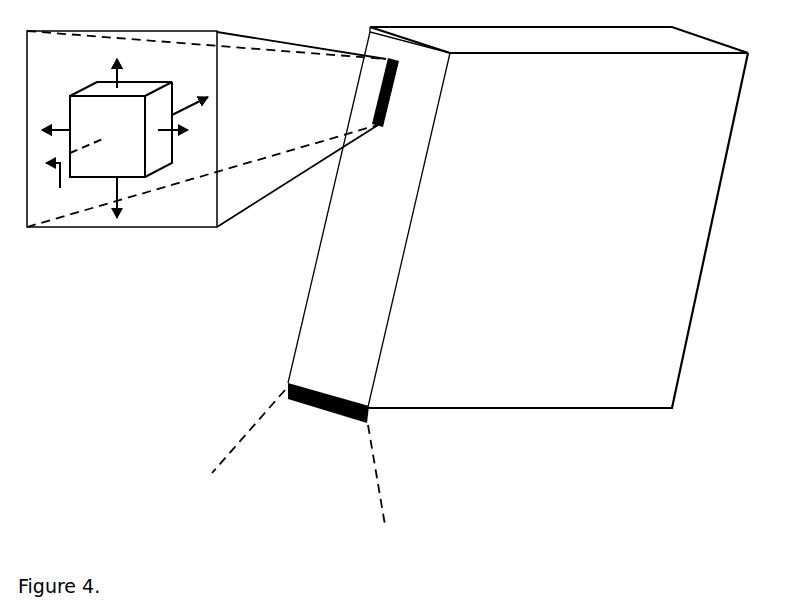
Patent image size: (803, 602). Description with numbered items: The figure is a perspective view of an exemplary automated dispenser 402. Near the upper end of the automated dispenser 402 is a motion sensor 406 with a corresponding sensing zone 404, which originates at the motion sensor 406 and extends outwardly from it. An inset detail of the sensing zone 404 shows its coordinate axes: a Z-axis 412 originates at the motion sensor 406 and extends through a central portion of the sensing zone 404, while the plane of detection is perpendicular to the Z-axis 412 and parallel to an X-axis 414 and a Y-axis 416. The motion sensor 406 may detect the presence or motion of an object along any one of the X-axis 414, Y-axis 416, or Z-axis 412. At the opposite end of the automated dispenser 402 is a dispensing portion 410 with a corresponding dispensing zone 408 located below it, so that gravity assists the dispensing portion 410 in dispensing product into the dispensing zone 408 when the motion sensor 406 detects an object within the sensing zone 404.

The automated dispenser 402 is at (522, 408).
The sensing zone 404 is at (117, 227).
The motion sensor 406 is at (392, 98).
The dispensing zone 408 is at (384, 504).
The dispensing portion 410 is at (331, 393).
The Z-axis 412 is at (58, 189).
The X-axis 414 is at (53, 130).
The Y-axis 416 is at (119, 70).